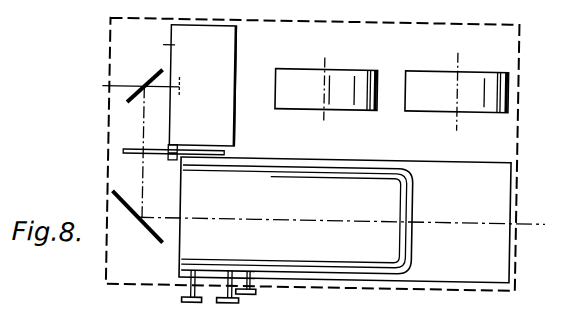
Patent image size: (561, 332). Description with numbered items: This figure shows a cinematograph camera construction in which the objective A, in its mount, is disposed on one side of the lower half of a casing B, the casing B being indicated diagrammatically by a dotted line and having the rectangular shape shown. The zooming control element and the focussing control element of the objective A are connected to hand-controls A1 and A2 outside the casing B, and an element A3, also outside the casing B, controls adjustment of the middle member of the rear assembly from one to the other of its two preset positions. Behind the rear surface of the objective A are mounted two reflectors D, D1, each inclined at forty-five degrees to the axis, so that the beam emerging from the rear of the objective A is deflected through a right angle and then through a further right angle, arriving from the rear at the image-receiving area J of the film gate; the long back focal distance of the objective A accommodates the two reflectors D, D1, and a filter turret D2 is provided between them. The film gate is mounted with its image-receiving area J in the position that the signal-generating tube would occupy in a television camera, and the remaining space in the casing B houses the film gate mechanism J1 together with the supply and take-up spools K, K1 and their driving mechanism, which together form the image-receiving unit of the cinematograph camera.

The objective A is at (487, 205).
The zooming hand-control A1 is at (183, 299).
The focussing hand-control A2 is at (232, 296).
The rear assembly adjusting element A3 is at (257, 292).
The casing B is at (517, 108).
The reflector D is at (113, 196).
The reflector D1 is at (125, 143).
The filter turret D2 is at (122, 152).
The image-receiving area of the film gate J is at (177, 88).
The film gate mechanism J1 is at (157, 44).
The supply spool K is at (340, 77).
The take-up spool K1 is at (477, 78).